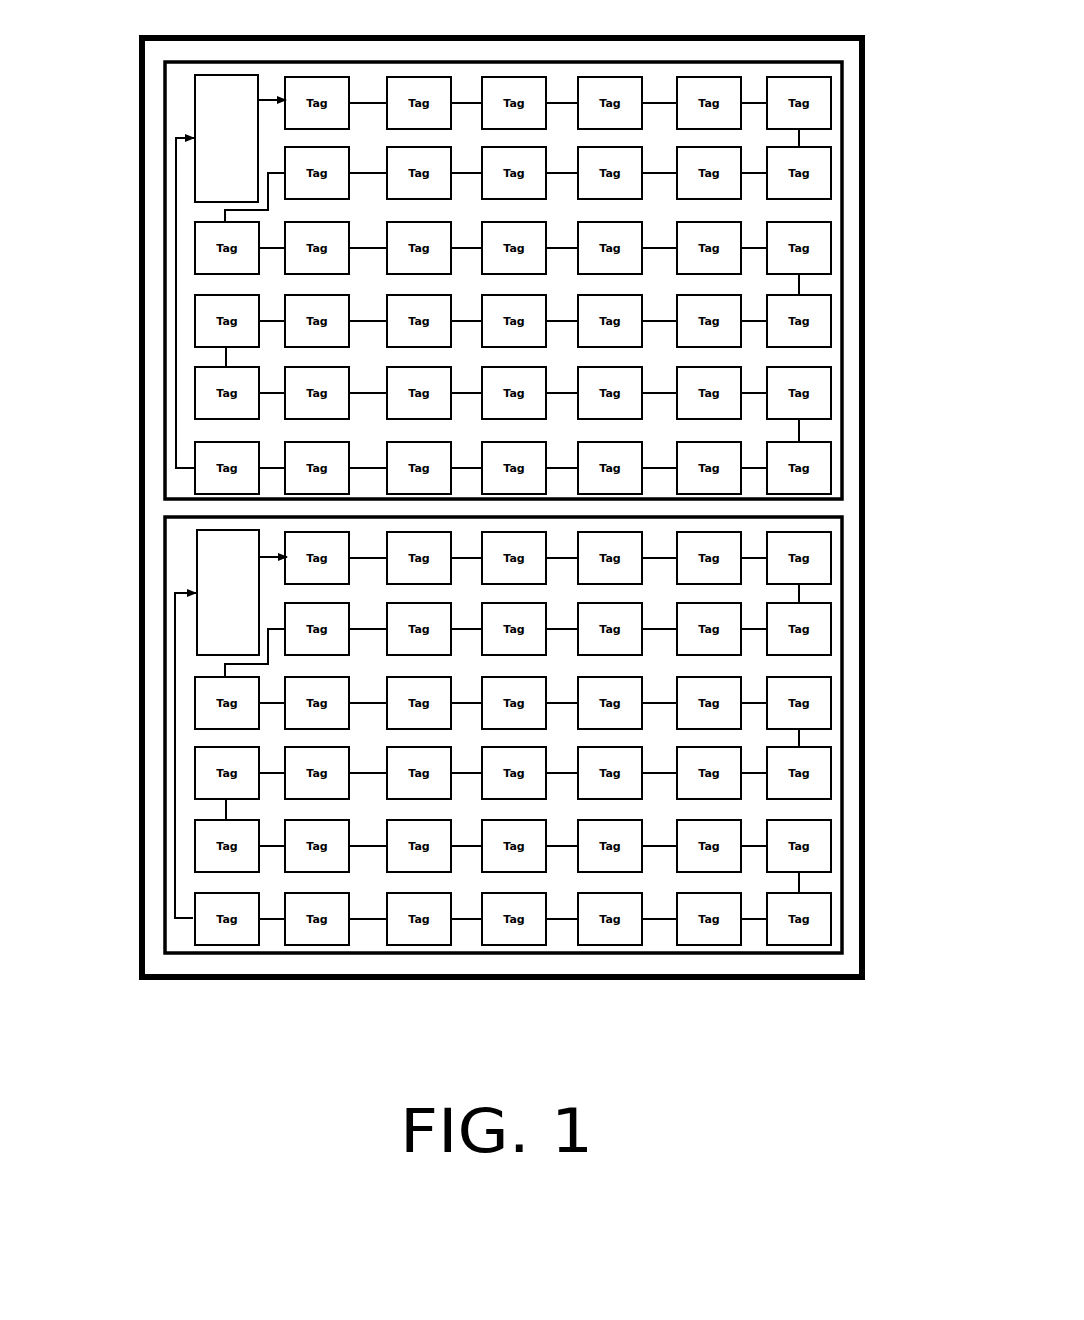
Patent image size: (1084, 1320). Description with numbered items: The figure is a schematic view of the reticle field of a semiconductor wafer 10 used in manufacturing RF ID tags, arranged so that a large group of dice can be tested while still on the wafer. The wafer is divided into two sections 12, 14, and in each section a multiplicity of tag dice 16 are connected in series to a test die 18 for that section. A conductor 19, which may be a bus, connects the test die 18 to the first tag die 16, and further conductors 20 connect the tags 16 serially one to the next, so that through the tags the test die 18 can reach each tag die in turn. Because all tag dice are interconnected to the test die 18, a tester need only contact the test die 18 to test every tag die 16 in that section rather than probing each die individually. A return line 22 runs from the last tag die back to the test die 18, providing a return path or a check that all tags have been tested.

The semiconductor wafer 10 is at (880, 134).
The first section of the wafer 12 is at (848, 327).
The second section of the wafer 14 is at (848, 755).
The tag dice 16 is at (500, 78).
The test die 18 is at (215, 90).
The conductor connecting test die to first tag die 19 is at (270, 100).
The conductors connecting tags serially 20 is at (560, 100).
The return line 22 is at (176, 285).